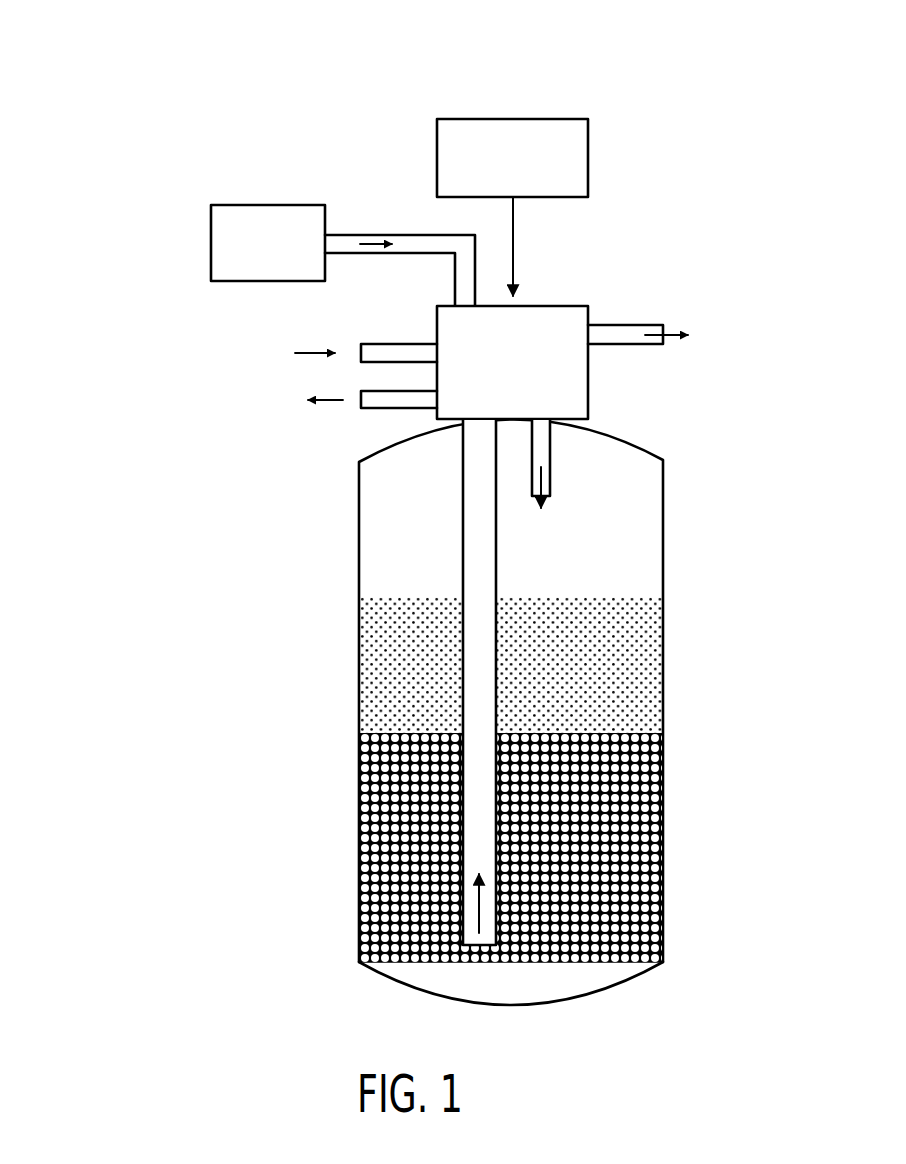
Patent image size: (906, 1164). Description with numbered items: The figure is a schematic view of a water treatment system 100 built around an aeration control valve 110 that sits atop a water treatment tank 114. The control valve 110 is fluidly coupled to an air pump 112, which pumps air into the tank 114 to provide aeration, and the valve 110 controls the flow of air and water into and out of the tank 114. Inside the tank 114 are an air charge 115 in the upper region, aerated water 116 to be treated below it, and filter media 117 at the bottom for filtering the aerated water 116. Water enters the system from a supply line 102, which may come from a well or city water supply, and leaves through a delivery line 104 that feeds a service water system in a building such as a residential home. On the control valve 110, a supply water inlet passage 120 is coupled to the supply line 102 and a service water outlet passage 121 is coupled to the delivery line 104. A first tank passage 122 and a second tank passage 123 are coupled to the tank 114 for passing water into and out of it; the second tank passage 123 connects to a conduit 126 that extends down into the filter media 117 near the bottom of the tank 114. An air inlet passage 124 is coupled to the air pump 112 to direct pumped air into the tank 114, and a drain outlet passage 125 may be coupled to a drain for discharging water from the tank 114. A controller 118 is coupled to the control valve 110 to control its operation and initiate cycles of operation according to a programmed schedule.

The water treatment system 100 is at (343, 80).
The supply line 102 is at (313, 350).
The delivery line 104 is at (322, 405).
The aeration control valve 110 is at (550, 305).
The air pump 112 is at (211, 243).
The water treatment tank 114 is at (359, 533).
The air charge 115 is at (425, 564).
The aerated water 116 is at (425, 682).
The filter media 117 is at (424, 865).
The controller 118 is at (513, 119).
The supply water inlet passage 120 is at (368, 348).
The service water outlet passage 121 is at (359, 412).
The first tank passage 122 is at (550, 442).
The second tank passage 123 is at (463, 441).
The air inlet passage 124 is at (457, 270).
The drain outlet passage 125 is at (621, 329).
The conduit 126 is at (497, 562).